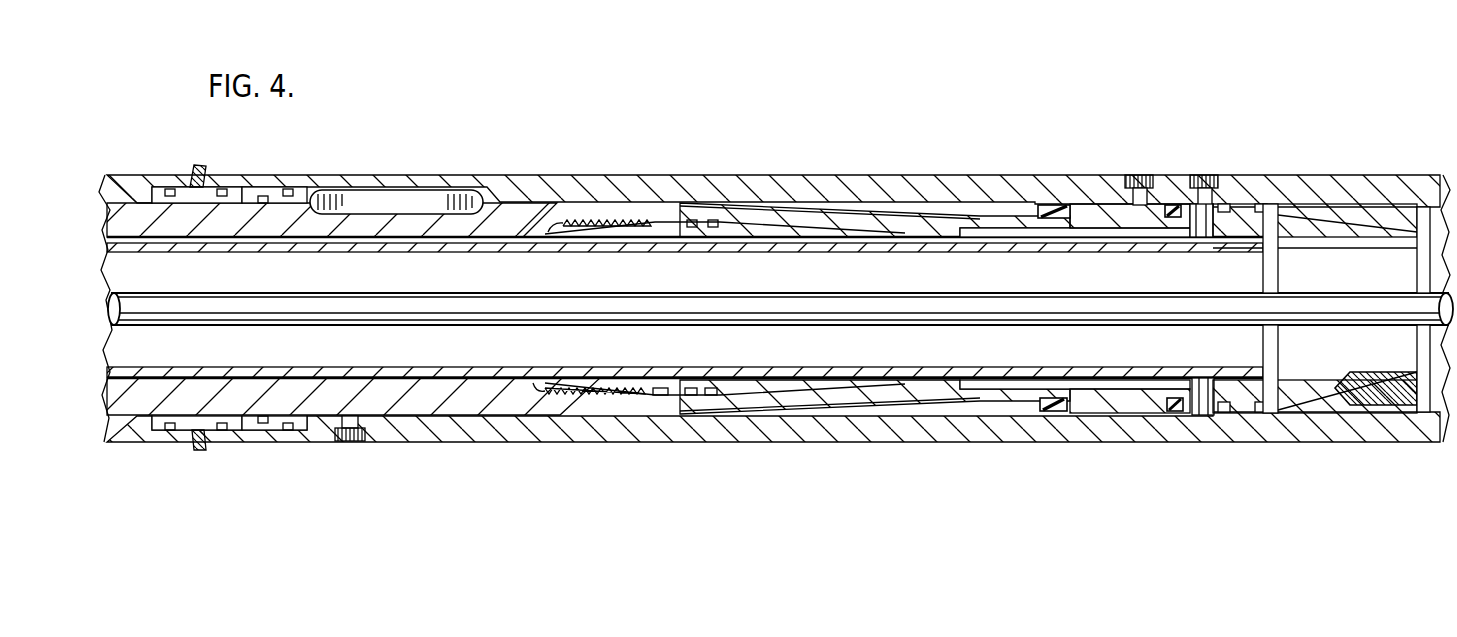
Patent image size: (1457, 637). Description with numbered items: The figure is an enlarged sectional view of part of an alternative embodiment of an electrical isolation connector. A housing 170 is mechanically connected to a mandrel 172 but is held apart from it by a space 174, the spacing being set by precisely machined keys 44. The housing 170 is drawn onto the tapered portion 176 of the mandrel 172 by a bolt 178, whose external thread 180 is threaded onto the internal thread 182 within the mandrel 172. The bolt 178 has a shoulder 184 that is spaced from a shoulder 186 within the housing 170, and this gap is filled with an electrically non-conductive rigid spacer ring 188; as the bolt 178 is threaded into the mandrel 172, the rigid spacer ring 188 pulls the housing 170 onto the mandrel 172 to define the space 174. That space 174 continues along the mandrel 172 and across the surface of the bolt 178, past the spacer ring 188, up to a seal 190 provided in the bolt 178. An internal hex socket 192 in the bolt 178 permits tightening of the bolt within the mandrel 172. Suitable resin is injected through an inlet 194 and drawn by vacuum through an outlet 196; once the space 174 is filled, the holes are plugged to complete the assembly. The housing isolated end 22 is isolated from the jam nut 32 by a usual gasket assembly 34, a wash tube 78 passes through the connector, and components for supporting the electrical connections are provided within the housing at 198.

The housing isolated end 22 is at (223, 186).
The jam nut 32 is at (162, 167).
The gasket assembly 34 is at (216, 428).
The keys 44 is at (405, 198).
The wash tube 78 is at (931, 366).
The housing 170 is at (892, 170).
The mandrel 172 is at (513, 215).
The space 174 is at (657, 190).
The tapered portion 176 is at (745, 201).
The bolt 178 is at (966, 228).
The external thread 180 is at (622, 398).
The internal thread 182 is at (598, 220).
The shoulder 184 is at (1080, 204).
The shoulder 186 is at (1043, 204).
The rigid spacer ring 188 is at (1048, 412).
The seal 190 is at (1180, 412).
The internal hex socket 192 is at (1147, 383).
The inlet 194 is at (348, 443).
The outlet 196 is at (1138, 175).
The components for supporting the electrical connections 198 is at (1345, 212).